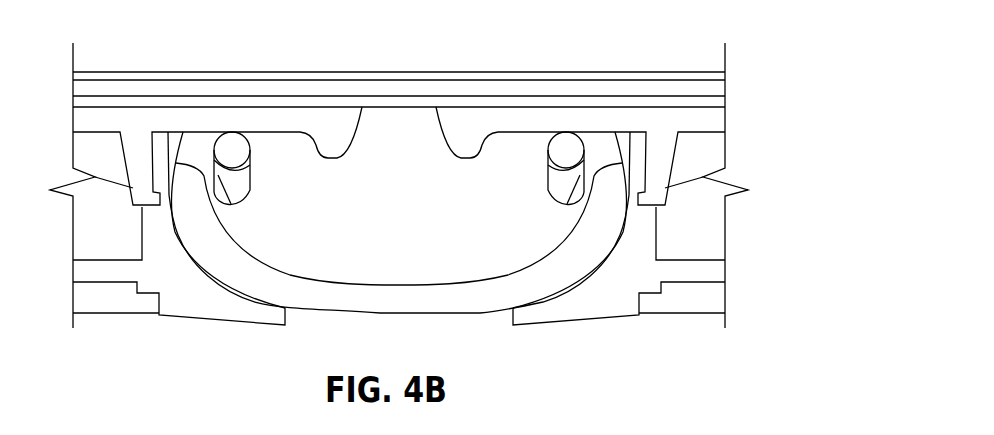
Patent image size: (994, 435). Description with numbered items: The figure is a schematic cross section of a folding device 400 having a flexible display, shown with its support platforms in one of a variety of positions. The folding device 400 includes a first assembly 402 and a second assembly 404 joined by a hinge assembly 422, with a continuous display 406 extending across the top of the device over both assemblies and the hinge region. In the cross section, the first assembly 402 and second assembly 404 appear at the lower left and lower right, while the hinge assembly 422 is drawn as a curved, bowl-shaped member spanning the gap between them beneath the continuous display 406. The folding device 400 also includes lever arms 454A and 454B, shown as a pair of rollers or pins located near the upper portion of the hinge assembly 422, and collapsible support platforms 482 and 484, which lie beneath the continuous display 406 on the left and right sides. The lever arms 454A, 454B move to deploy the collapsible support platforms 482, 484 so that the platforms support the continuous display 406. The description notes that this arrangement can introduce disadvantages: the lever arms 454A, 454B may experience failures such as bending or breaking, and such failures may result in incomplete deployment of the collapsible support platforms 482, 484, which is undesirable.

The folding device 400 is at (767, 50).
The continuous display 406 is at (196, 90).
The collapsible support platform 482 is at (83, 123).
The collapsible support platform 484 is at (717, 125).
The lever arm 454A is at (558, 160).
The lever arm 454B is at (240, 157).
The first assembly 402 is at (242, 313).
The second assembly 404 is at (600, 312).
The hinge assembly 422 is at (380, 313).